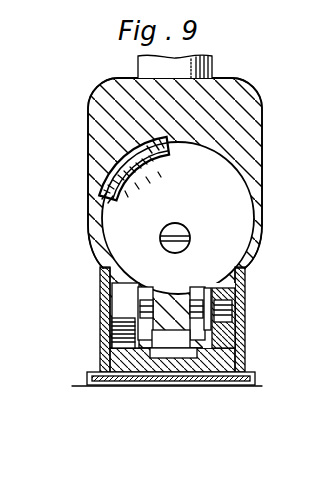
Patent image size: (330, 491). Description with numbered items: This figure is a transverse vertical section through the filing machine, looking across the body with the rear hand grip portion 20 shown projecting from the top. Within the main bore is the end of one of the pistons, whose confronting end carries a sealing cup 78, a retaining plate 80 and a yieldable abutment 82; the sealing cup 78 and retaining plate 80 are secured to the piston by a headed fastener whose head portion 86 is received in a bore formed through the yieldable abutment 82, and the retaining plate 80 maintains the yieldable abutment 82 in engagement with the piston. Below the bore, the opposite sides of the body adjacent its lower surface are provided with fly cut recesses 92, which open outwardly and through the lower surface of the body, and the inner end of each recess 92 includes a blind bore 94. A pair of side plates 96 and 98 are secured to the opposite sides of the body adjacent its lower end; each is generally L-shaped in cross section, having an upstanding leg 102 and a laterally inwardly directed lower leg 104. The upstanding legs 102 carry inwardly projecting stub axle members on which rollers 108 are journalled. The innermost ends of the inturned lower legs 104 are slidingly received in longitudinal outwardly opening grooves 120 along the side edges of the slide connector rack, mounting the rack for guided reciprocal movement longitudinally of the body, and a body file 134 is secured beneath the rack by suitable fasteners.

The rear hand grip portion 20 is at (217, 63).
The sealing cup 78 is at (128, 164).
The retaining plate 80 is at (118, 181).
The yieldable abutment 82 is at (222, 189).
The head portion 86 is at (180, 236).
The fly cut recesses 92 is at (160, 292).
The blind bore 94 is at (196, 301).
The side plate 96 is at (246, 320).
The side plate 98 is at (103, 310).
The upstanding leg 102 is at (243, 348).
The lower leg 104 is at (110, 372).
The roller 108 is at (120, 321).
The grooves 120 is at (147, 360).
The body file 134 is at (258, 386).